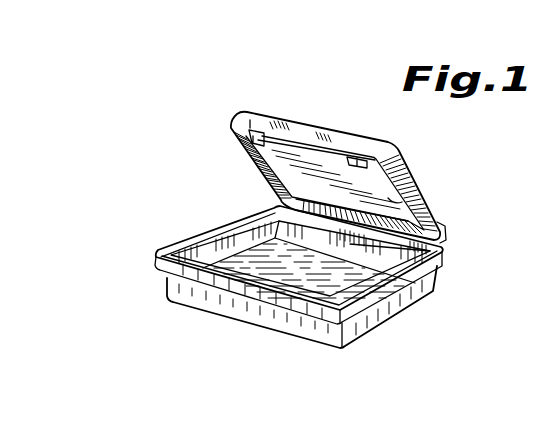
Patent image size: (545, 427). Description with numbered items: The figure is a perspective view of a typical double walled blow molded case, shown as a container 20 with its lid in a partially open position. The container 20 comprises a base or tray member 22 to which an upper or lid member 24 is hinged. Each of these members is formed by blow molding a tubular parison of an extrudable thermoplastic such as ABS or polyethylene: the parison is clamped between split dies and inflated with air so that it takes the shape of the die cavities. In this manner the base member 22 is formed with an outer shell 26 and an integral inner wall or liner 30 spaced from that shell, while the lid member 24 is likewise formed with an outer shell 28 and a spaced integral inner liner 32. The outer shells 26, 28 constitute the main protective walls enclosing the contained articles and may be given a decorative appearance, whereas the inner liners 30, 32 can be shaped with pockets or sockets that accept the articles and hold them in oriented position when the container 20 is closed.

The container 20 is at (248, 182).
The base or tray member 22 is at (205, 315).
The upper or lid member 24 is at (372, 140).
The outer shell 26 is at (270, 316).
The outer shell 28 is at (420, 190).
The inner wall or liner 30 is at (372, 274).
The inner wall or liner 32 is at (394, 203).